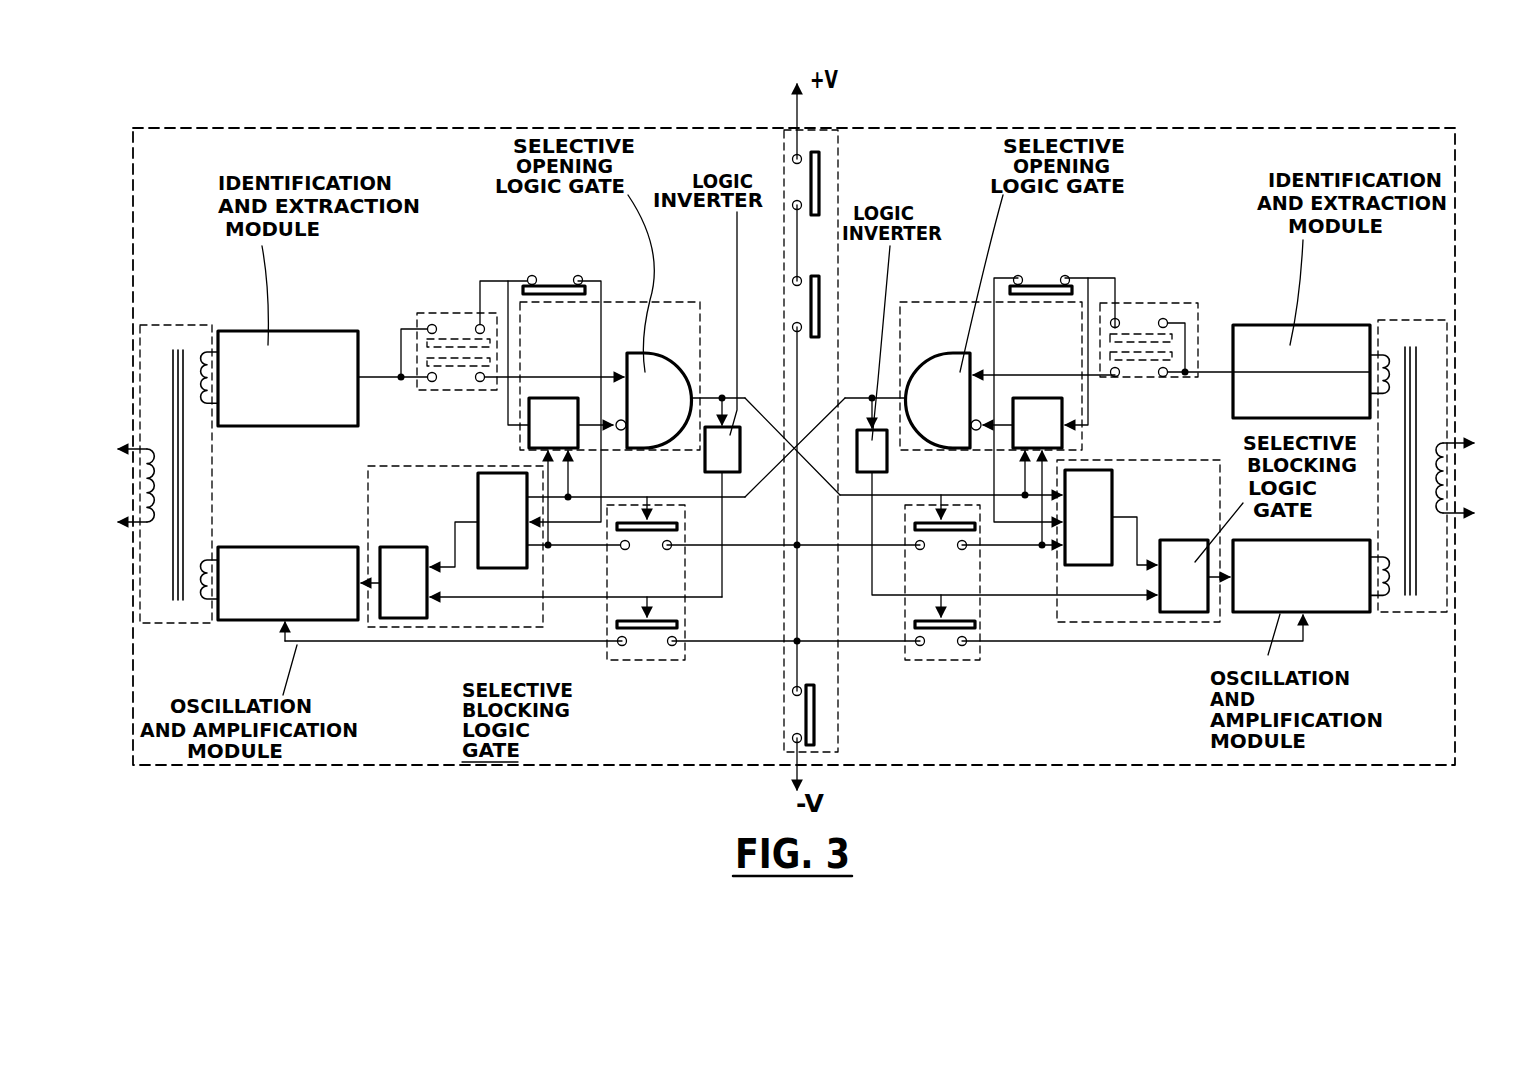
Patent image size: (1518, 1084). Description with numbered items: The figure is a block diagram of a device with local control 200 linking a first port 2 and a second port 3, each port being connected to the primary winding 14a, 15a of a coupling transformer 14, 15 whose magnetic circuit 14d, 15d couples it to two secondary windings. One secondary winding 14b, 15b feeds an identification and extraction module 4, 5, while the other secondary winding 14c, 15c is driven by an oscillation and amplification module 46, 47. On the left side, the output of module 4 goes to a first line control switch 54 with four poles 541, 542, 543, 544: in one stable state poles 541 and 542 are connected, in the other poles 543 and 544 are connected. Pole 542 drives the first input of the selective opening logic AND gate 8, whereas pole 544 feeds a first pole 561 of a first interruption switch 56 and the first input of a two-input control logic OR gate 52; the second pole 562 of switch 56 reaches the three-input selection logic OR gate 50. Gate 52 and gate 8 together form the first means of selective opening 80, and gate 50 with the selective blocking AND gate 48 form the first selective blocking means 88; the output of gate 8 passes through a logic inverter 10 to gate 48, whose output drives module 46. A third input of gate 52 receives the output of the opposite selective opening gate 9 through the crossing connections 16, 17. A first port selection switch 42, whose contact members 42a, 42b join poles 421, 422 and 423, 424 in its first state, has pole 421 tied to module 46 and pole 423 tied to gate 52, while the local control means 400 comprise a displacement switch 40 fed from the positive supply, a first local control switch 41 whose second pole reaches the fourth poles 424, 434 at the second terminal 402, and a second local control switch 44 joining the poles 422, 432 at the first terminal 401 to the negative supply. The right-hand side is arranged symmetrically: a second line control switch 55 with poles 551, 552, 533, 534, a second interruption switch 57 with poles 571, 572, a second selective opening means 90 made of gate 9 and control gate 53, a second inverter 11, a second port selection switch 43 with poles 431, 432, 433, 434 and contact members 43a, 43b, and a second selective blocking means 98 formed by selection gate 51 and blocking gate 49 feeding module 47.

The port 2 is at (118, 445).
The port 3 is at (1465, 495).
The identification and extraction module 4 is at (270, 345).
The identification and extraction module 5 is at (1290, 345).
The first selective opening logic AND gate 8 is at (668, 362).
The second selective opening logic gate 9 is at (940, 360).
The logic inverter 10 is at (703, 465).
The logic inverter 11 is at (889, 460).
The coupling transformer 14 is at (205, 488).
The primary winding 14a is at (188, 468).
The secondary winding 14b is at (200, 350).
The secondary winding 14c is at (200, 602).
The magnetic circuit 14d is at (175, 555).
The coupling transformer 15 is at (1434, 484).
The transformer line winding 15a is at (1440, 520).
The secondary winding 15b is at (1392, 350).
The secondary winding 15c is at (1390, 598).
The magnetic circuit 15d is at (1420, 372).
The cross connection 16 is at (770, 490).
The cross connection 17 is at (828, 485).
The bipolar displacement switch 40 is at (823, 180).
The first local control switch 41 is at (823, 298).
The first port selection switch 42 is at (659, 605).
The switch 42a is at (616, 528).
The switch 42b is at (680, 626).
The second port selection switch 43 is at (959, 604).
The switch 43a is at (975, 530).
The switch 43b is at (978, 625).
The second local control switch 44 is at (818, 710).
The first oscillation and amplification module 46 is at (283, 622).
The second oscillation and amplification module 47 is at (1305, 615).
The first selective blocking logic AND gate 48 is at (405, 546).
The second selective blocking logic gate 49 is at (1185, 540).
The first selection logic OR gate 50 is at (490, 500).
The second selection logic OR gate 51 is at (1100, 472).
The first control logic OR gate 52 is at (552, 397).
The second control logic gate 53 is at (1040, 397).
The first line control switch 54 is at (429, 331).
The second line control switch 55 is at (1175, 326).
The first interruption switch 56 is at (582, 254).
The second interruption switch 57 is at (1071, 254).
The means of selective opening 80 is at (615, 344).
The selective blocking means 88 is at (455, 563).
The second means of selective opening 90 is at (991, 334).
The second means of selective blocking 98 is at (1142, 564).
The device with local control 200 is at (1466, 766).
The local control means 400 is at (840, 148).
The first terminal 401 is at (797, 640).
The second terminal 402 is at (797, 549).
The first pole 421 is at (620, 647).
The second pole 422 is at (674, 647).
The third pole 423 is at (625, 550).
The fourth pole 424 is at (670, 550).
The first pole 431 is at (920, 647).
The second pole 432 is at (964, 647).
The third pole 433 is at (920, 550).
The fourth pole 434 is at (962, 550).
The switch contact 533 is at (1118, 320).
The switch contact 534 is at (1167, 320).
The first pole 541 is at (430, 382).
The second pole 542 is at (478, 382).
The third pole 543 is at (428, 326).
The fourth pole 544 is at (478, 324).
The pole 551 is at (1115, 377).
The pole 552 is at (1163, 377).
The first pole 561 is at (530, 275).
The second pole 562 is at (582, 276).
The pole 571 is at (1016, 275).
The pole 572 is at (1069, 276).